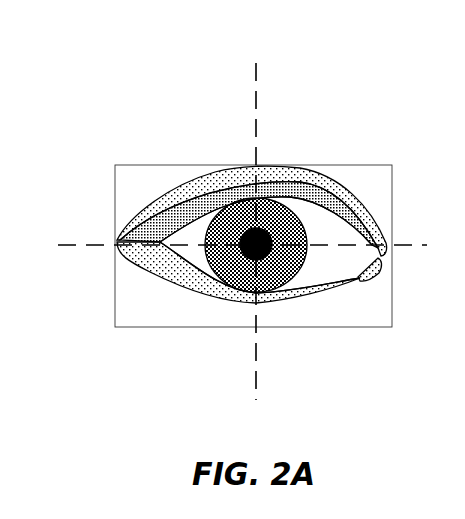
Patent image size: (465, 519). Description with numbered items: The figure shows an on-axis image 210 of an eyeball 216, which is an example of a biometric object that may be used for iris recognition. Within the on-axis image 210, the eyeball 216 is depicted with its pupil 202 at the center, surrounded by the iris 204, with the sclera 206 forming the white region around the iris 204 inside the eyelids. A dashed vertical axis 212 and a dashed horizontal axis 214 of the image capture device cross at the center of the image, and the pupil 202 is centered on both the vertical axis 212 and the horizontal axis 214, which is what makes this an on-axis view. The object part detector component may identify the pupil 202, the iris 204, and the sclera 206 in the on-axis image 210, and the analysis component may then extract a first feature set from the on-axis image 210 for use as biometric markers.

The pupil 202 is at (245, 228).
The iris 204 is at (277, 223).
The sclera 206 is at (330, 237).
The on-axis image 210 is at (152, 88).
The vertical axis 212 is at (255, 64).
The horizontal axis 214 is at (73, 245).
The eyeball 216 is at (141, 182).